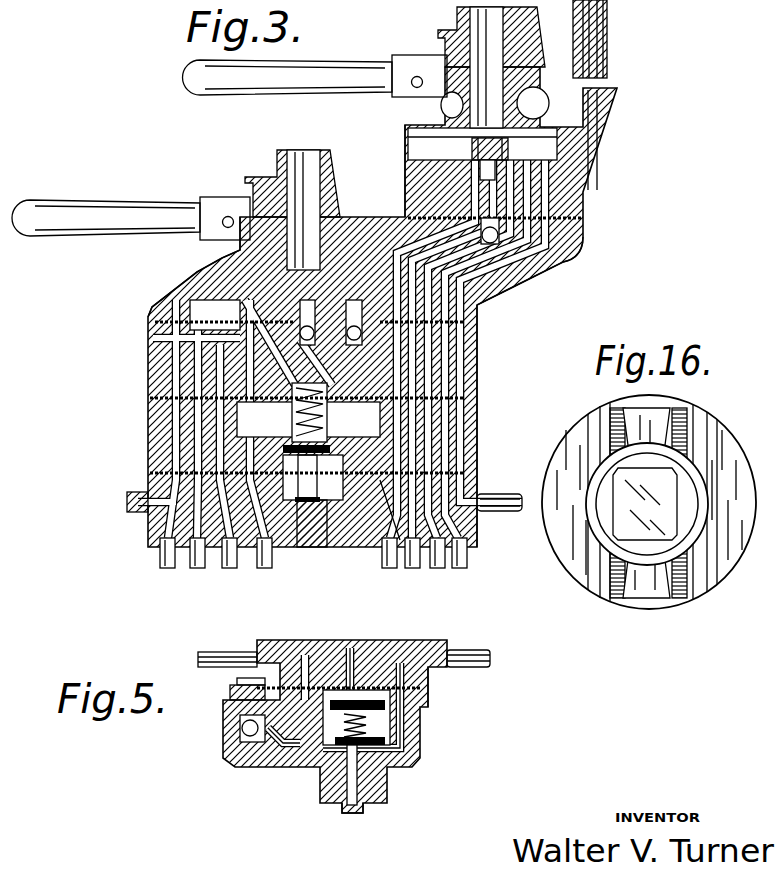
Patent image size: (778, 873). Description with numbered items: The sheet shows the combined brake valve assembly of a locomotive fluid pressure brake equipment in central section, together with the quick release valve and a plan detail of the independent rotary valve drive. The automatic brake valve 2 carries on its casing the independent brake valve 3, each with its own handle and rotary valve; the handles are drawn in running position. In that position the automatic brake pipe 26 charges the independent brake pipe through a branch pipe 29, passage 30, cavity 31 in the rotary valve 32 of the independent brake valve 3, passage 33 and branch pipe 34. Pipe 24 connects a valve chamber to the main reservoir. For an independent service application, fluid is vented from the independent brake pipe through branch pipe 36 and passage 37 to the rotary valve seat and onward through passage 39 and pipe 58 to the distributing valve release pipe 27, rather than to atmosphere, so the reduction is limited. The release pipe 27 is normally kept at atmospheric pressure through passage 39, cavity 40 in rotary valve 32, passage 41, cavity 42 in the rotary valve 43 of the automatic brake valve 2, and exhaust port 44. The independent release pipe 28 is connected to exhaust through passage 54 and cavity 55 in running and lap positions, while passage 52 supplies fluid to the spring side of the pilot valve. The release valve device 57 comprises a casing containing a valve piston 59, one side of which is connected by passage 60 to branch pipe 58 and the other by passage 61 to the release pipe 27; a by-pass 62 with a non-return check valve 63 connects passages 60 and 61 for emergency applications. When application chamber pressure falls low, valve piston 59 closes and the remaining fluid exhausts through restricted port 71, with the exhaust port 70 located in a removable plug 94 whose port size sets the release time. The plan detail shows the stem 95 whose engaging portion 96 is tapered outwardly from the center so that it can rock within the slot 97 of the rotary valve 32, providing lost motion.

In FIG. 3, the automatic brake valve 2 is at (173, 287).
In FIG. 3, the independent brake valve 3 is at (452, 119).
In FIG. 3, the pipe 24 is at (228, 562).
In FIG. 3, the automatic brake pipe 26 is at (267, 563).
In FIG. 5, the distributing valve release pipe 27 is at (467, 655).
In FIG. 3, the independent release pipe 28 is at (410, 558).
In FIG. 3, the branch pipe 29 is at (165, 562).
In FIG. 3, the passage 30 is at (170, 345).
In FIG. 3, the cavity 31 is at (560, 184).
In FIG. 3, the rotary valve 32 is at (527, 170).
In FIG. 16, the rotary valve 32 is at (717, 442).
In FIG. 3, the passage 33 is at (520, 262).
In FIG. 3, the branch pipe 34 is at (460, 557).
In FIG. 3, the branch pipe 36 is at (437, 560).
In FIG. 3, the passage 37 is at (438, 420).
In FIG. 3, the passage 39 is at (390, 547).
In FIG. 3, the cavity 40 is at (420, 175).
In FIG. 3, the passage 41 is at (400, 207).
In FIG. 3, the cavity 42 is at (350, 290).
In FIG. 3, the rotary valve 43 is at (243, 270).
In FIG. 3, the exhaust port 44 is at (353, 338).
In FIG. 3, the passage 52 is at (602, 102).
In FIG. 3, the passage 54 is at (420, 375).
In FIG. 3, the cavity 55 is at (470, 195).
In FIG. 5, the release valve device 57 is at (313, 655).
In FIG. 3, the pipe 58 is at (388, 560).
In FIG. 5, the pipe 58 is at (217, 657).
In FIG. 5, the valve piston 59 is at (420, 748).
In FIG. 5, the passage 60 is at (345, 660).
In FIG. 5, the passage 61 is at (403, 672).
In FIG. 5, the by-pass 62 is at (283, 743).
In FIG. 5, the non-return check valve 63 is at (243, 733).
In FIG. 5, the exhaust port 70 is at (352, 817).
In FIG. 5, the restricted port 71 is at (323, 748).
In FIG. 5, the removable plug 94 is at (368, 803).
In FIG. 16, the stem 95 is at (707, 570).
In FIG. 16, the engaging portion 96 is at (648, 593).
In FIG. 16, the slot 97 is at (617, 593).